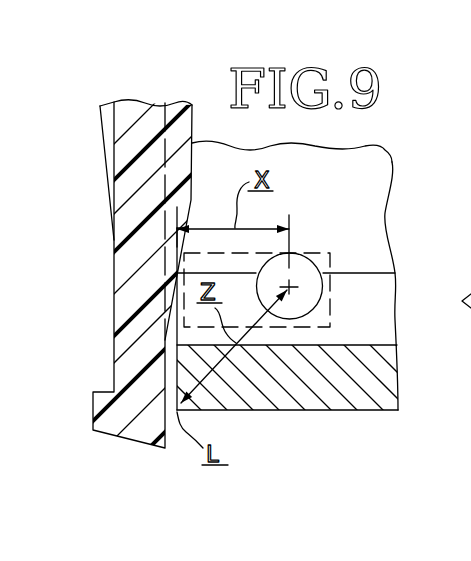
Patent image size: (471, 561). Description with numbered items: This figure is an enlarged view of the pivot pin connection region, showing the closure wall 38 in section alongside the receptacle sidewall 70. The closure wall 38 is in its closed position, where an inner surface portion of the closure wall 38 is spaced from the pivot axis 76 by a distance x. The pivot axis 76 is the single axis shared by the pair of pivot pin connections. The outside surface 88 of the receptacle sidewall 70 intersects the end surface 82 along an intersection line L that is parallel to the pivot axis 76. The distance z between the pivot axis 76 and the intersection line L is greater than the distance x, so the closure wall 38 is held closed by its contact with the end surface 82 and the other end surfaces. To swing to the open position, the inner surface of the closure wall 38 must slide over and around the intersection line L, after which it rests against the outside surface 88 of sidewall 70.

The closure wall 38 is at (108, 136).
The receptacle sidewall 70 is at (373, 383).
The pivot axis 76 is at (308, 272).
The end surface 82 is at (176, 366).
The outside surface 88 is at (343, 412).